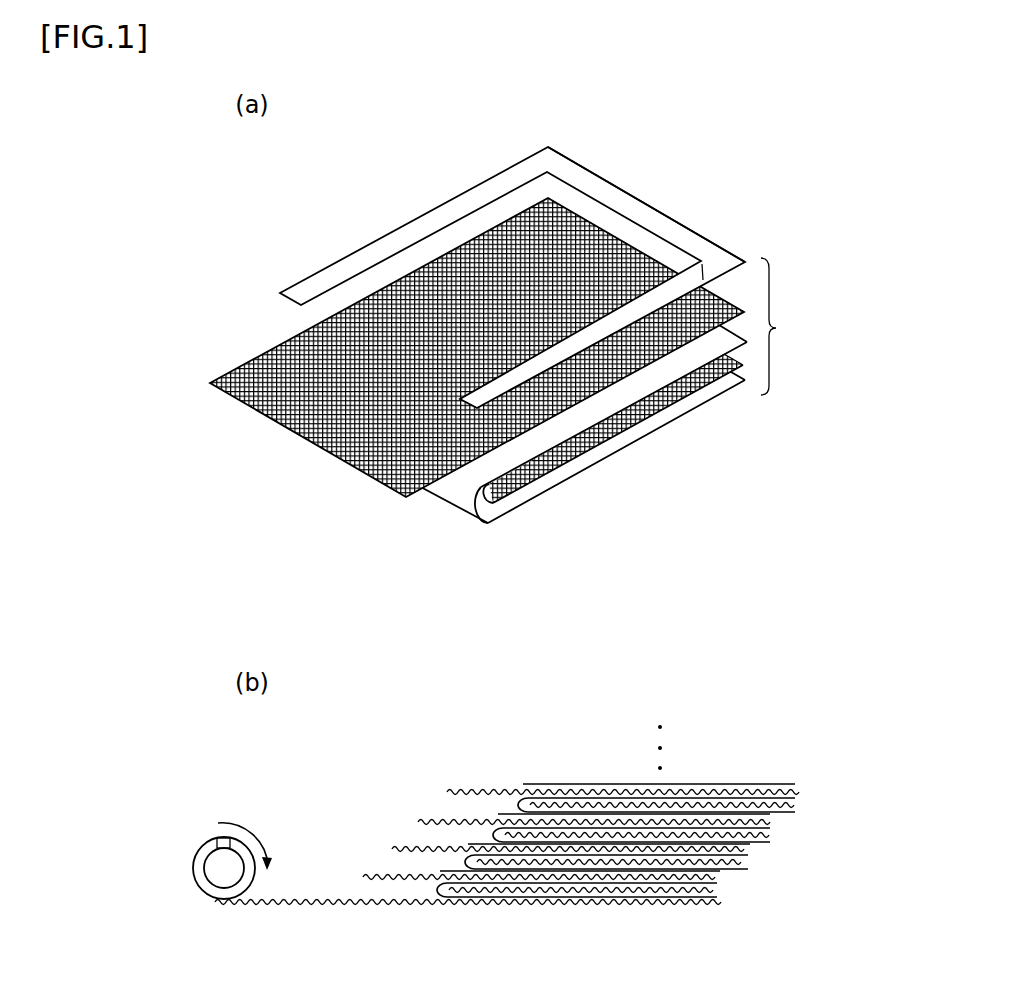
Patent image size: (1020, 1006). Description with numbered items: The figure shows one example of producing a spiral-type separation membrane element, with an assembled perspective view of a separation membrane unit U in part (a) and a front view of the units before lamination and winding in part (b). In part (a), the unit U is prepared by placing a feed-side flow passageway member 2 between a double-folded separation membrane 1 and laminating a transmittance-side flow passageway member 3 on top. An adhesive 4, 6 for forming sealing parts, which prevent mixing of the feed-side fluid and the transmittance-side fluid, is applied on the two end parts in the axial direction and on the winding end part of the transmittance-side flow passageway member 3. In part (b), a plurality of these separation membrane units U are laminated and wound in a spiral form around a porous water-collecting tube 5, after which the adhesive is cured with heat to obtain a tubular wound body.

The separation membrane 1 is at (559, 436).
The feed-side flow passageway member 2 is at (649, 424).
The transmittance-side flow passageway member 3 is at (339, 470).
The adhesive 4 is at (493, 181).
The porous water-collecting tube 5 is at (202, 893).
The adhesive 6 is at (627, 198).
The separation membrane unit U is at (779, 833).